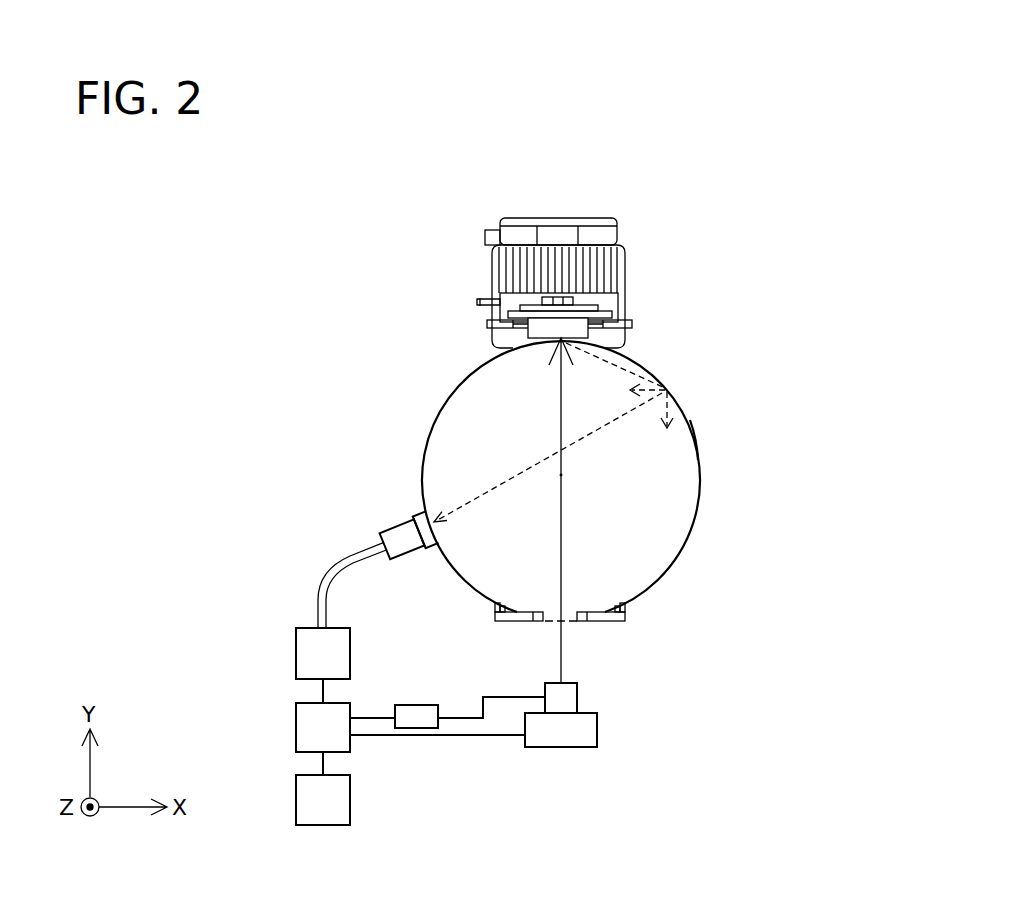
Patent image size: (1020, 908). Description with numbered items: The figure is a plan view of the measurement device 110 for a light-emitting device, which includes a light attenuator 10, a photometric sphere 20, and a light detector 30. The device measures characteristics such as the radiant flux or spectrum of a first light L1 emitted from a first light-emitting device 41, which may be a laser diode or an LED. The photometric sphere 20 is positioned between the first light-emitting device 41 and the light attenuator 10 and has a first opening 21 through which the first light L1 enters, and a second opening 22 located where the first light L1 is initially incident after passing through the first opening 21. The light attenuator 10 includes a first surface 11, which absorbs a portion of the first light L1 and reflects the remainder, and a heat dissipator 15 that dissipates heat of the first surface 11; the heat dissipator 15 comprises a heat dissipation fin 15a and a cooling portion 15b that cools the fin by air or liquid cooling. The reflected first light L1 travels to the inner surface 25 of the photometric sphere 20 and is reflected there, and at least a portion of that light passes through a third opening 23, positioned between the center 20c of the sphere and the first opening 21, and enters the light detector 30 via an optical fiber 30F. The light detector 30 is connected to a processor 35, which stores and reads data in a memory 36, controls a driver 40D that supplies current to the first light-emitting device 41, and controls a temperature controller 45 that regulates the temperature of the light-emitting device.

The measurement device 110 is at (753, 201).
The light attenuator 10 is at (757, 253).
The heat dissipator 15 is at (608, 270).
The heat dissipation fin 15a is at (510, 270).
The cooling portion 15b is at (511, 232).
The first surface 11 is at (627, 351).
The second opening 22 is at (526, 337).
The photometric sphere 20 is at (425, 433).
The inner surface 25 is at (696, 432).
The center of the photometric sphere 20c is at (561, 476).
The first opening 21 is at (547, 620).
The first light L1 is at (560, 400).
The third opening 23 is at (420, 508).
The optical fiber 30F is at (320, 590).
The light detector 30 is at (310, 653).
The processor 35 is at (310, 724).
The memory 36 is at (310, 799).
The driver 40D is at (418, 708).
The first light-emitting device 41 is at (564, 698).
The temperature controller 45 is at (572, 732).